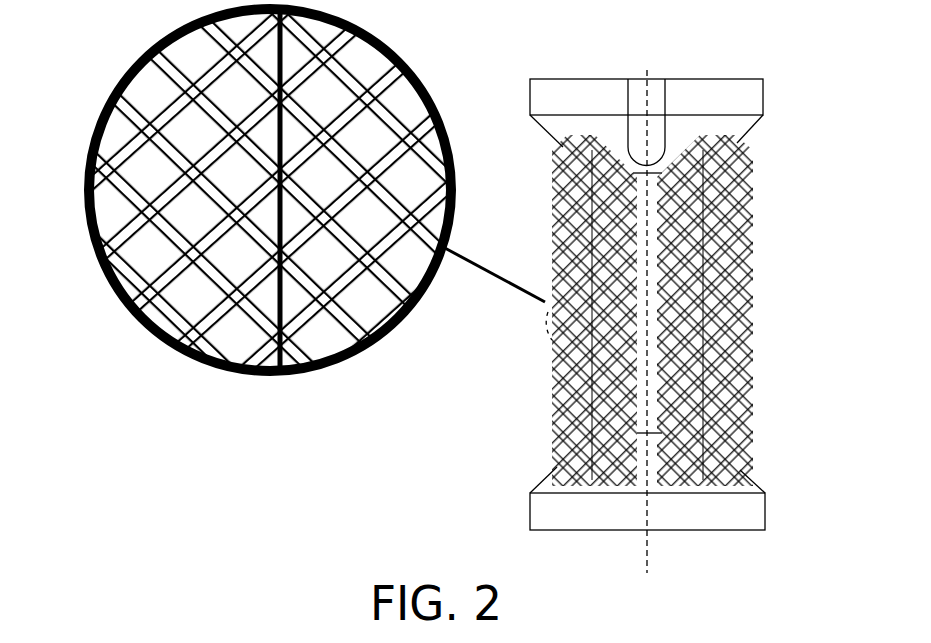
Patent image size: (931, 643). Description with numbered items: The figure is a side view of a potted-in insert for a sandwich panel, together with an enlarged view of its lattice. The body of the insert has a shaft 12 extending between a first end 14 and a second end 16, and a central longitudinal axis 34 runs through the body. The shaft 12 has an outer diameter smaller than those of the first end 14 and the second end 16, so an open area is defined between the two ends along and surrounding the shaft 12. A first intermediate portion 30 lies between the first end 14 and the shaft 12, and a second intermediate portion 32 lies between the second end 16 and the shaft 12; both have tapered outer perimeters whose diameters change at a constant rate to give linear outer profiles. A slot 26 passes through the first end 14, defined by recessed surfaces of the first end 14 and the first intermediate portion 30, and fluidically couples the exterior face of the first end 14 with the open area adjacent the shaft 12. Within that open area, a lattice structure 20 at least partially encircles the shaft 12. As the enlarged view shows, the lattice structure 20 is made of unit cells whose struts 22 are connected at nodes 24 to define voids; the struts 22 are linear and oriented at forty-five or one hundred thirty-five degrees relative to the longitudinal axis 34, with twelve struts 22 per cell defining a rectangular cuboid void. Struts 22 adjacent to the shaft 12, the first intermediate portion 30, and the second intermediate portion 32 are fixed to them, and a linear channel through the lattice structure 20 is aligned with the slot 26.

The shaft 12 is at (448, 153).
The first end 14 is at (600, 78).
The second end 16 is at (748, 531).
The lattice structure 20 is at (110, 173).
The struts 22 is at (265, 322).
The nodes 24 is at (328, 310).
The slot 26 is at (665, 97).
The first intermediate portion 30 is at (730, 123).
The second intermediate portion 32 is at (750, 482).
The longitudinal axis 34 is at (650, 552).